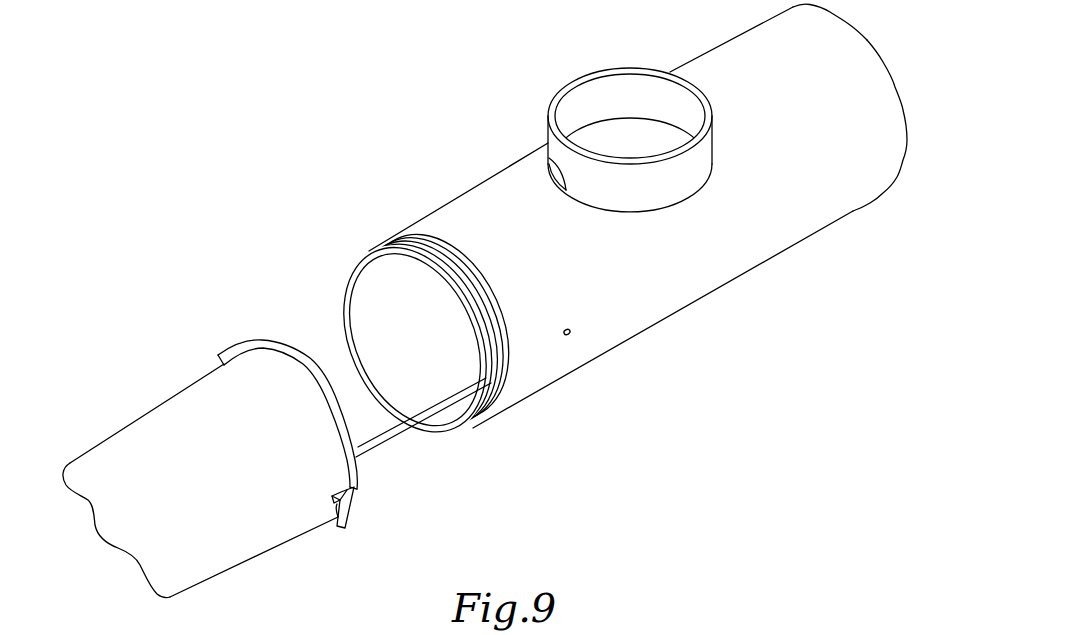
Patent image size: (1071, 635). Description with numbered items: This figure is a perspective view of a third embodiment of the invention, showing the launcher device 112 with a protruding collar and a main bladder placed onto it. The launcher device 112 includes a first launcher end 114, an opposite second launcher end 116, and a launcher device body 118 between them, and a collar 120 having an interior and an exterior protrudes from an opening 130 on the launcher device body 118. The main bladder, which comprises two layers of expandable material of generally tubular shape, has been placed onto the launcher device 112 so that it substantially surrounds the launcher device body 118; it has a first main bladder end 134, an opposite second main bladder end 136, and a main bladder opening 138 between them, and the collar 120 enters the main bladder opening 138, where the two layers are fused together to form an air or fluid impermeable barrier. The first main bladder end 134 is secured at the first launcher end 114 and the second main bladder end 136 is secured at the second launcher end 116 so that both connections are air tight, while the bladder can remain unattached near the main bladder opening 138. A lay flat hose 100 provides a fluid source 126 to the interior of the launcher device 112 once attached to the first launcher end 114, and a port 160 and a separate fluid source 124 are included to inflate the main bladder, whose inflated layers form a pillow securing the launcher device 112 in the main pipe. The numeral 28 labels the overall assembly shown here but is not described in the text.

The conduit body 28 is at (685, 308).
The lay flat hose 100 is at (223, 363).
The launcher device 112 is at (414, 333).
The first launcher end 114 is at (348, 330).
The second launcher end 116 is at (883, 62).
The launcher device body 118 is at (393, 343).
The collar 120 is at (578, 82).
The fluid source 124 is at (383, 438).
The fluid source 126 is at (260, 543).
The opening 130 is at (623, 87).
The first main bladder end 134 is at (380, 303).
The second main bladder end 136 is at (850, 25).
The main bladder opening 138 is at (550, 153).
The port 160 is at (569, 336).